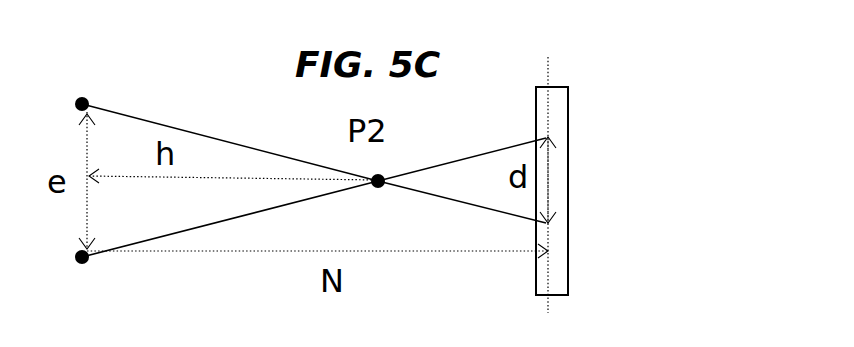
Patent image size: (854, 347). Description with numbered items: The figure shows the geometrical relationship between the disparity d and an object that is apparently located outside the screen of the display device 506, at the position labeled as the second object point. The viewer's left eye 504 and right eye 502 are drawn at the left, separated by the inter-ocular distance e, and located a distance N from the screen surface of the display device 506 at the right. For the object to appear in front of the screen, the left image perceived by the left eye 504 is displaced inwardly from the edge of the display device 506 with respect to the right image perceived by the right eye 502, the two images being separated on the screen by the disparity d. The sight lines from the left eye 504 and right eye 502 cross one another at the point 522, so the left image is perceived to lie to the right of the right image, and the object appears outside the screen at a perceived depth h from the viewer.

The right eye 502 is at (90, 263).
The left eye 504 is at (88, 97).
The display device 506 is at (552, 86).
The pinhole point P2 522 is at (380, 178).